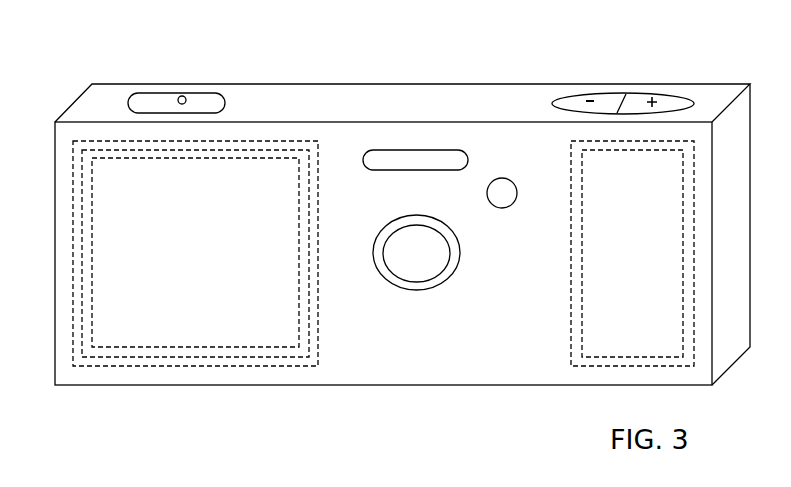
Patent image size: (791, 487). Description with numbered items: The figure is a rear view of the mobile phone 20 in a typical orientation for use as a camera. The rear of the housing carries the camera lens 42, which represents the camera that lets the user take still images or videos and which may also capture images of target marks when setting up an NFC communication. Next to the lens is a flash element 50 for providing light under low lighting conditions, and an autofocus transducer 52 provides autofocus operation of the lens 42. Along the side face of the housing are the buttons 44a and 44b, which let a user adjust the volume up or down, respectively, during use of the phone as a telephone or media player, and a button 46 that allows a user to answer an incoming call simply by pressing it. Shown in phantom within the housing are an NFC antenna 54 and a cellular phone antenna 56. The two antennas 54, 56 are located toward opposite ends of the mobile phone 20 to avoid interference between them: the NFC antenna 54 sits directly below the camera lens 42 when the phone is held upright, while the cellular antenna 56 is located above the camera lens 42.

The mobile phone 20 is at (110, 65).
The camera lens 42 is at (422, 292).
The button 44a is at (633, 97).
The button 44b is at (603, 96).
The button 46 is at (165, 97).
The flash element 50 is at (396, 150).
The autofocus transducer 52 is at (502, 208).
The NFC antenna 54 is at (138, 366).
The cellular phone antenna 56 is at (610, 366).